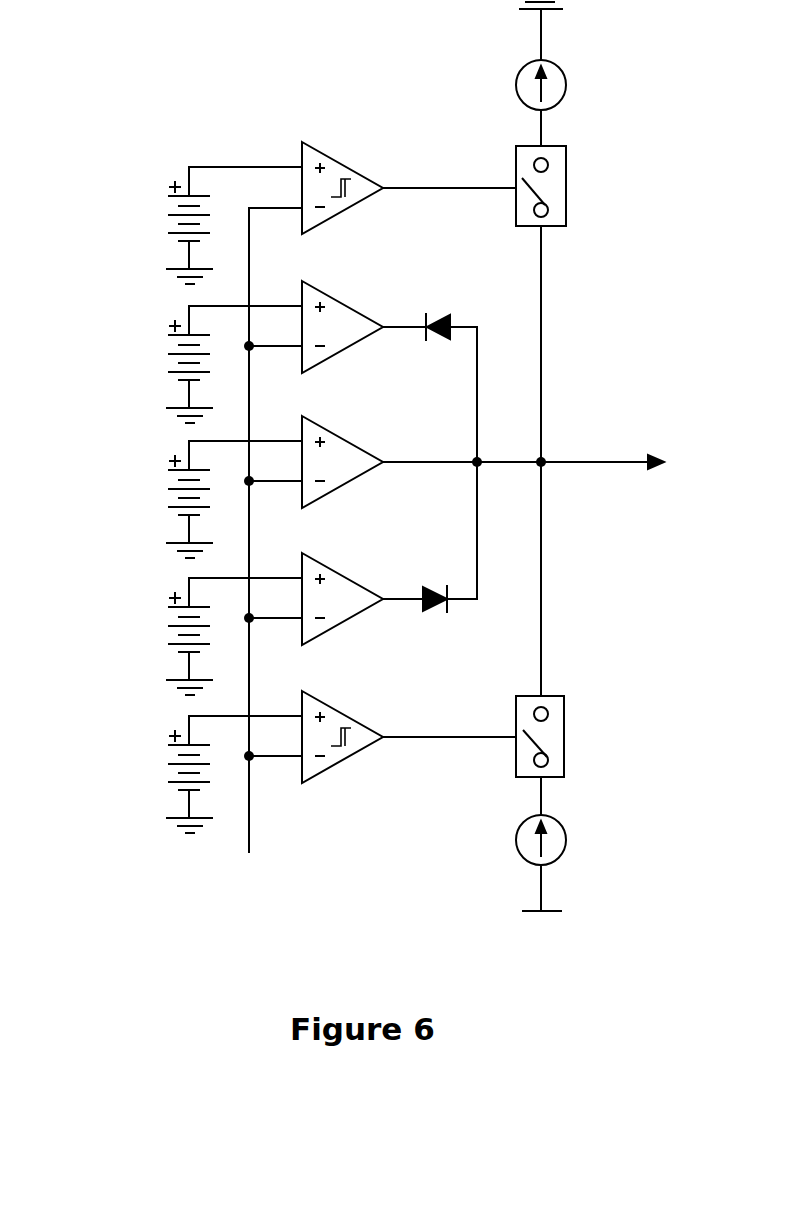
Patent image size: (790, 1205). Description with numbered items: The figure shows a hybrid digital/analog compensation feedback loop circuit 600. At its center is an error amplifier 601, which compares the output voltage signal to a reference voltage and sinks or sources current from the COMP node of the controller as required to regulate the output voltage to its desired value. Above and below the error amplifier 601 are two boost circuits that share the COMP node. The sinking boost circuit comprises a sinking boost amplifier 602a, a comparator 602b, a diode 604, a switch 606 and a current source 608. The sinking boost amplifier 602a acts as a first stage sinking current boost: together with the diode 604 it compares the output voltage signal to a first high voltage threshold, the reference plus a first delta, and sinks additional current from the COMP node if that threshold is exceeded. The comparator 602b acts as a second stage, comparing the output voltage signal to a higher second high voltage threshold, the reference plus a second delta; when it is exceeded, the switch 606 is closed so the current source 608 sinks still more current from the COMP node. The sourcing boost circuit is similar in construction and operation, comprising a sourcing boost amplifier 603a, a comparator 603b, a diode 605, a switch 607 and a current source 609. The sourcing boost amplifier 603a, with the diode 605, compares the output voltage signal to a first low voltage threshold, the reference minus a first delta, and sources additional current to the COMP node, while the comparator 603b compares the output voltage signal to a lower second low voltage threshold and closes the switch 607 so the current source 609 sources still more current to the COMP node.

The hybrid digital/analog compensation feedback loop circuit 600 is at (360, 494).
The error amplifier 601 is at (322, 500).
The sinking boost amplifier 602a is at (328, 366).
The comparator 602b is at (328, 227).
The sourcing boost amplifier 603a is at (330, 639).
The comparator 603b is at (328, 775).
The diode 604 is at (444, 310).
The diode 605 is at (446, 588).
The switch 606 is at (566, 218).
The switch 607 is at (563, 735).
The current source 608 is at (560, 97).
The current source 609 is at (560, 855).